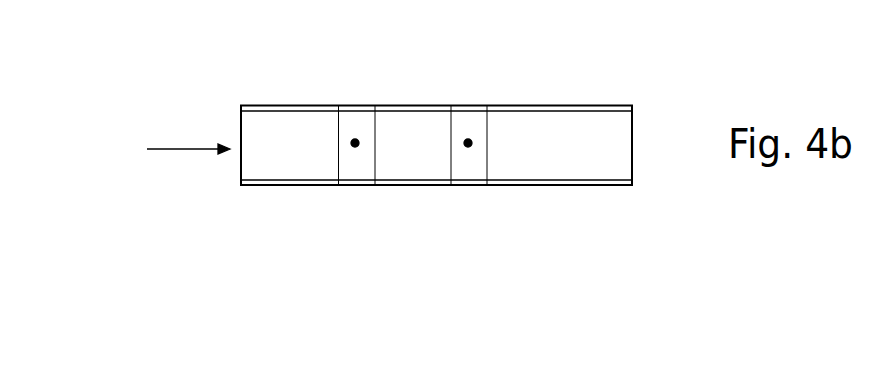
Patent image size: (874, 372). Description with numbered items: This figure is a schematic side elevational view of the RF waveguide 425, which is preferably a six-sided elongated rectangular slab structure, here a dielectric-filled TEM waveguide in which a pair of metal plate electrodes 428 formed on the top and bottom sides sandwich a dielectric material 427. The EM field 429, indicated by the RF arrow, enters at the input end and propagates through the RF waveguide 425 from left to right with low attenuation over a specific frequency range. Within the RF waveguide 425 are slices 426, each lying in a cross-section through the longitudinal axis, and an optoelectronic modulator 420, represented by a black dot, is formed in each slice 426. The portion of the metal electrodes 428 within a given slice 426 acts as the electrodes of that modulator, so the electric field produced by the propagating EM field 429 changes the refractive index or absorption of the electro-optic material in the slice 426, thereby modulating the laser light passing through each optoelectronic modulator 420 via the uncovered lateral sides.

The RF waveguide 425 is at (552, 92).
The slice 426 is at (357, 117).
The optoelectronic modulator 420 is at (355, 143).
The dielectric material 427 is at (630, 145).
The metal plate electrodes 428 is at (632, 108).
The EM field 429 is at (205, 150).